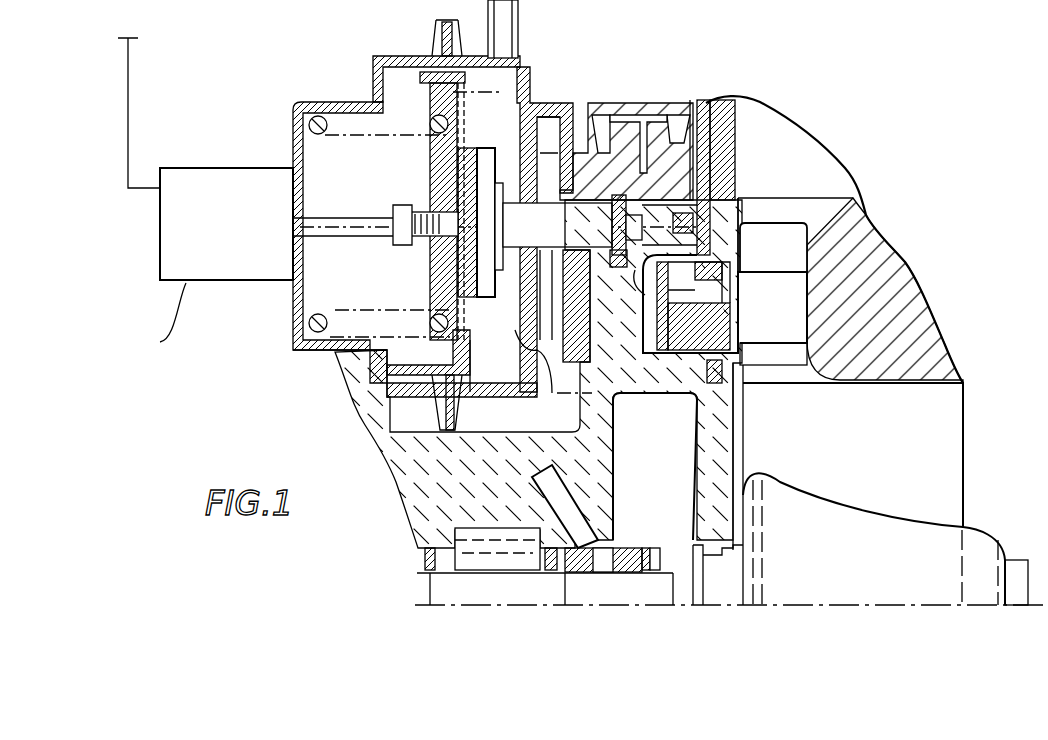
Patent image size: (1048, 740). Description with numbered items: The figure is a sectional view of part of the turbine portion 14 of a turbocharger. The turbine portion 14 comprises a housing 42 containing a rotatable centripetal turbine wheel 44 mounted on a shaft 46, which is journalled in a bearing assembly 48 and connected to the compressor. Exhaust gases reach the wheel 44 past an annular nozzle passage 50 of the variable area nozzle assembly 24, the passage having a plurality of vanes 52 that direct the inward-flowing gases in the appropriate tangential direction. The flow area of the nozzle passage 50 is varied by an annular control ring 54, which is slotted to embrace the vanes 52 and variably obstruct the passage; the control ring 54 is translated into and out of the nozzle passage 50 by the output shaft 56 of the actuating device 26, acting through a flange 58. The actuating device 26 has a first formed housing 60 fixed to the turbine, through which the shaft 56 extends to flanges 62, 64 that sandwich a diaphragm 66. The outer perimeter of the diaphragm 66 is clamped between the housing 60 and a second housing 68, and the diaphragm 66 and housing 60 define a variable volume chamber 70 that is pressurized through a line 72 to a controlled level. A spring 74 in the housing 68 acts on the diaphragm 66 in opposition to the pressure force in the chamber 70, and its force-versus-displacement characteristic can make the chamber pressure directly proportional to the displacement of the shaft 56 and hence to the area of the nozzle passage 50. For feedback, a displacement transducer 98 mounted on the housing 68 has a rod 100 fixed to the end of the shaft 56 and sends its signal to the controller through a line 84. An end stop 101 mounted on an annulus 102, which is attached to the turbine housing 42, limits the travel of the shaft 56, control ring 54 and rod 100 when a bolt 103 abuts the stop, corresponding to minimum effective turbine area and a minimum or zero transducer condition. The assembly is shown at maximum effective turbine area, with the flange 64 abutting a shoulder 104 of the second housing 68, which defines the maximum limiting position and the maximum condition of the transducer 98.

The turbine portion 14 is at (917, 272).
The variable area nozzle assembly 24 is at (652, 92).
The actuating device 26 is at (310, 95).
The housing 42 is at (920, 333).
The centripetal turbine wheel 44 is at (935, 470).
The shaft 46 is at (473, 588).
The bearing assembly 48 is at (633, 535).
The annular nozzle passage 50 is at (787, 260).
The vanes 52 is at (778, 335).
The annular control ring 54 is at (690, 333).
The output shaft 56 is at (545, 203).
The flange 58 is at (650, 297).
The first formed housing 60 is at (535, 88).
The flange 62 is at (487, 162).
The flange 64 is at (448, 105).
The diaphragm 66 is at (400, 392).
The second housing 68 is at (325, 357).
The variable volume chamber 70 is at (508, 372).
The line 72 is at (519, 28).
The spring 74 is at (350, 325).
The line 84 is at (132, 118).
The displacement transducer 98 is at (218, 255).
The rod 100 is at (342, 222).
The end stop 101 is at (742, 222).
The annulus 102 is at (690, 228).
The bolt 103 is at (648, 237).
The shoulder 104 is at (375, 78).